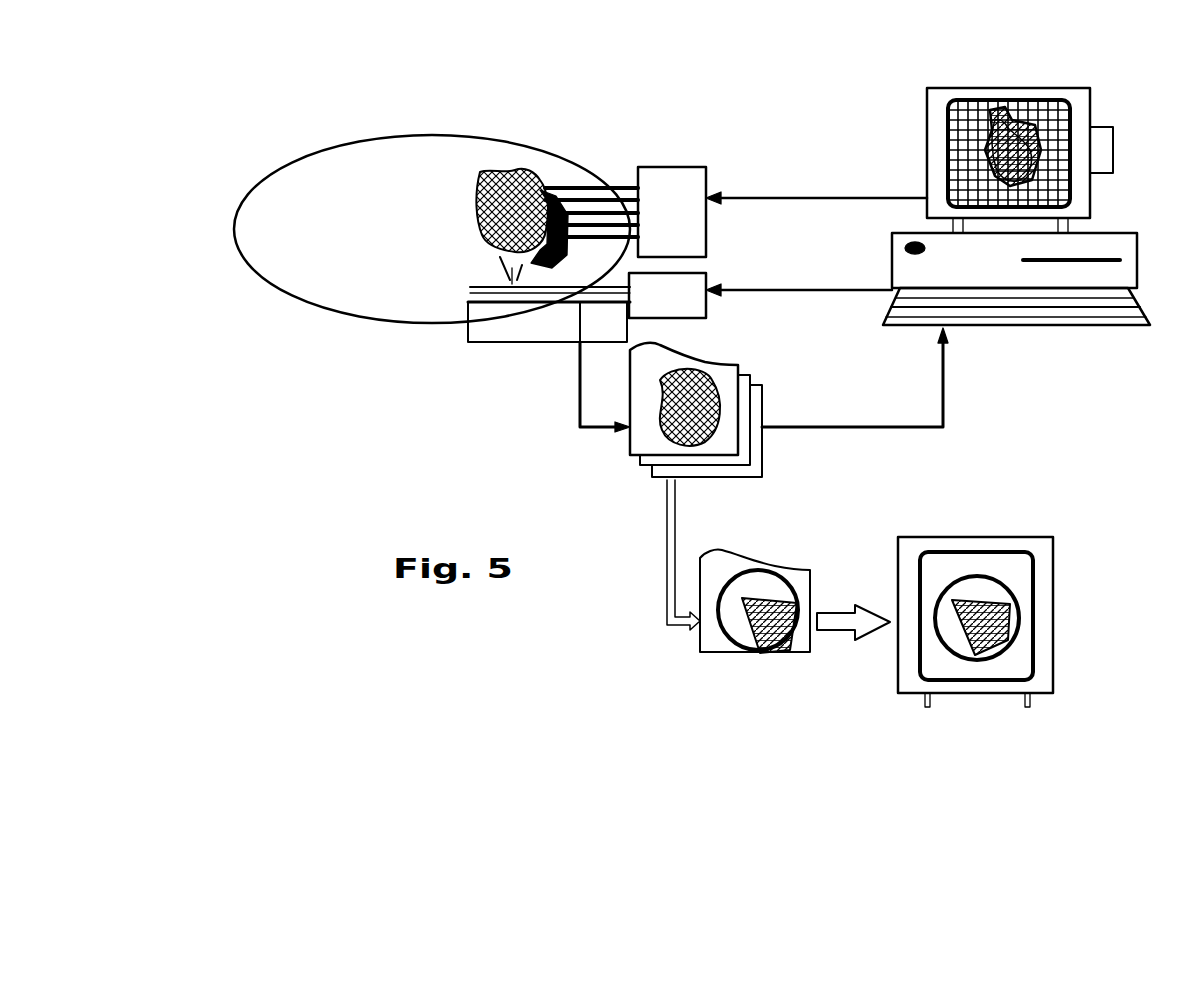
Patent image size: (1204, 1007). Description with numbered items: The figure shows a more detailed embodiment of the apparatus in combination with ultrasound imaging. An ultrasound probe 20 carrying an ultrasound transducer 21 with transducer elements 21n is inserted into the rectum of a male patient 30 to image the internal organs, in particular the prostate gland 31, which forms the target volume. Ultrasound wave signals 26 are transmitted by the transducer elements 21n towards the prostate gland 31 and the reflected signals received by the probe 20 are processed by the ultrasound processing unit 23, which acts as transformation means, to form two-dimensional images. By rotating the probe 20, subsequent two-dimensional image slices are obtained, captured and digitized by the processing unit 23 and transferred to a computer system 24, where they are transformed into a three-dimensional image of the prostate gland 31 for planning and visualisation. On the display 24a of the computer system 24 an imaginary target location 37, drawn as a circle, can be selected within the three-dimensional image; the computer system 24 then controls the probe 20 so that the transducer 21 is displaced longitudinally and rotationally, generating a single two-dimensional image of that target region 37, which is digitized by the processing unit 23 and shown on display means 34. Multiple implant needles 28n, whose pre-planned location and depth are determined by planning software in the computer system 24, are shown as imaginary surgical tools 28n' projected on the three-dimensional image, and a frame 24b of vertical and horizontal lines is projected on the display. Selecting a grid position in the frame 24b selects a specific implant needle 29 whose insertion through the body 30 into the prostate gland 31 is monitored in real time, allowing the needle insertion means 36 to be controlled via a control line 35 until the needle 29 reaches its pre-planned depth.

The male patient 30 is at (394, 241).
The prostate gland 31 is at (470, 212).
The implant needle 29 is at (476, 179).
The imaginary target location 37 is at (1003, 365).
The ultrasound wave signals 26 is at (488, 274).
The ultrasound transducer 21 is at (461, 305).
The transducer elements 21n is at (547, 341).
The implant needles 28n is at (608, 182).
The needle insertion means 36 is at (688, 178).
The control line 35 is at (824, 176).
The ultrasound probe 20 is at (701, 275).
The display 24b is at (1048, 90).
The display 24a is at (1067, 109).
The imaginary surgical tools 28n' is at (1132, 150).
The computer system 24 is at (1101, 295).
The ultrasound processing unit 23 is at (617, 465).
The display means 34 is at (1057, 653).